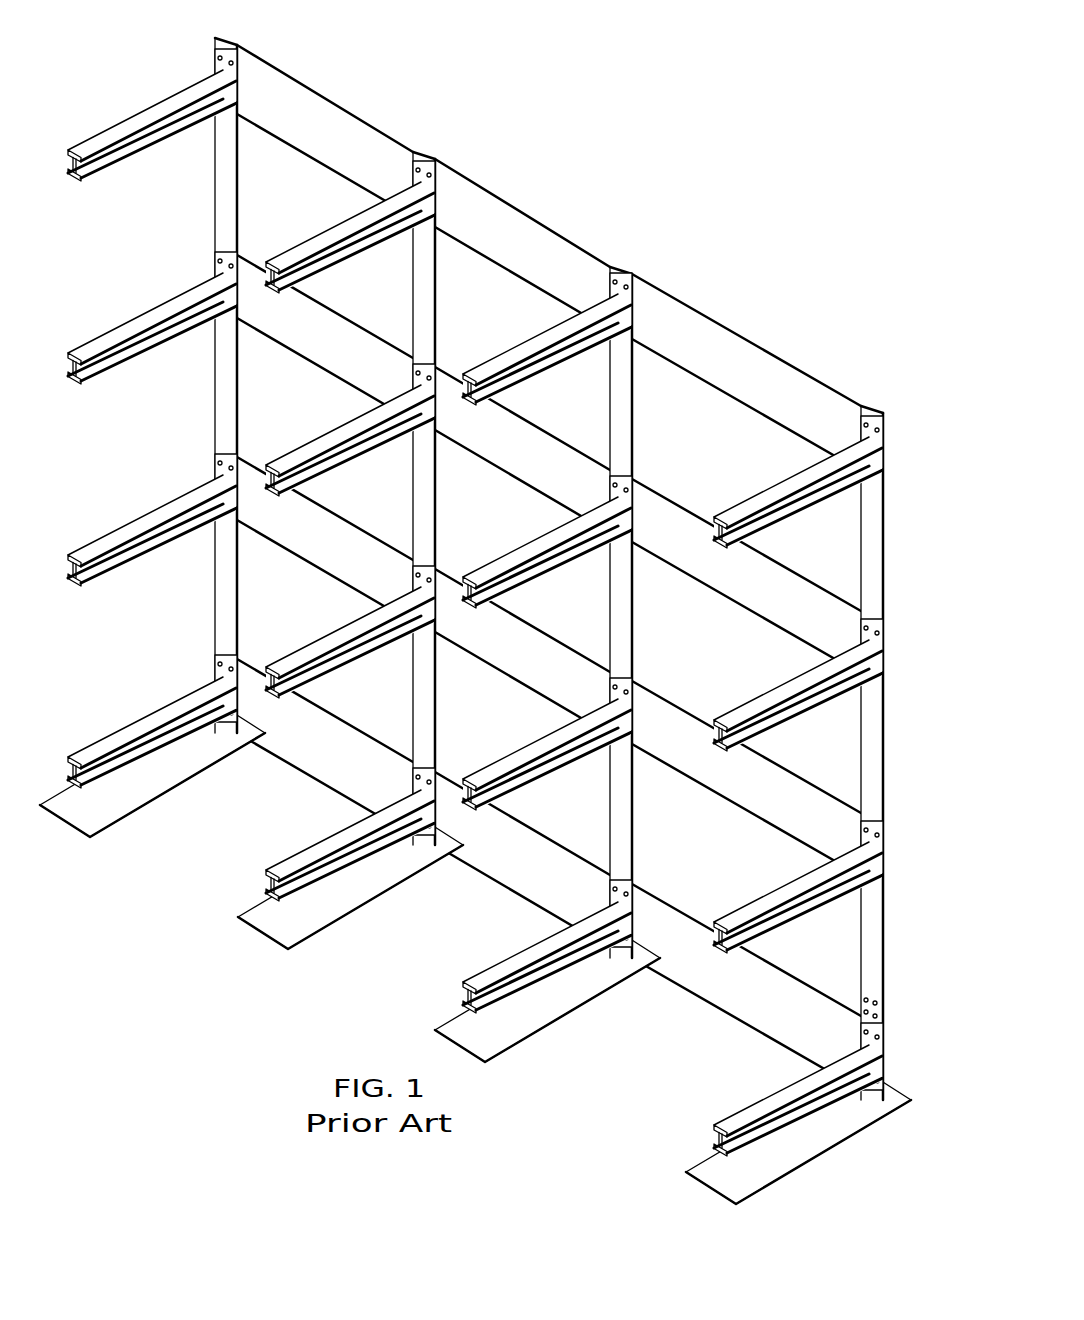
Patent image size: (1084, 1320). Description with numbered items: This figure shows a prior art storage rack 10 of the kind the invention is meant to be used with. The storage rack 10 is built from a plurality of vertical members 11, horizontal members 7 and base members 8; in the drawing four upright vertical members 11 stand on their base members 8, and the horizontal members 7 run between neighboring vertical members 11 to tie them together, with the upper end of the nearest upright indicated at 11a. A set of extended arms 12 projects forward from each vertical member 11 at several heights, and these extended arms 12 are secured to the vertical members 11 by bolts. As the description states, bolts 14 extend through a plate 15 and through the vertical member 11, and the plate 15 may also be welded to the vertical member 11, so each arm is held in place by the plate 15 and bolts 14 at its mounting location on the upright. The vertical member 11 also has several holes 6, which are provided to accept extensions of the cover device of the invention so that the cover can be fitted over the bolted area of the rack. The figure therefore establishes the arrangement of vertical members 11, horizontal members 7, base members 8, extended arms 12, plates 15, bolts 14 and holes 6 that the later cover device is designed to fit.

The storage rack 10 is at (498, 621).
The vertical member 11 is at (886, 948).
The top end of upright column 11a is at (884, 411).
The extended arm 12 is at (787, 1088).
The bolt 14 is at (889, 1034).
The plate 15 is at (888, 1056).
The hole 6 is at (877, 1003).
The horizontal member 7 is at (884, 780).
The base member 8 is at (813, 1142).